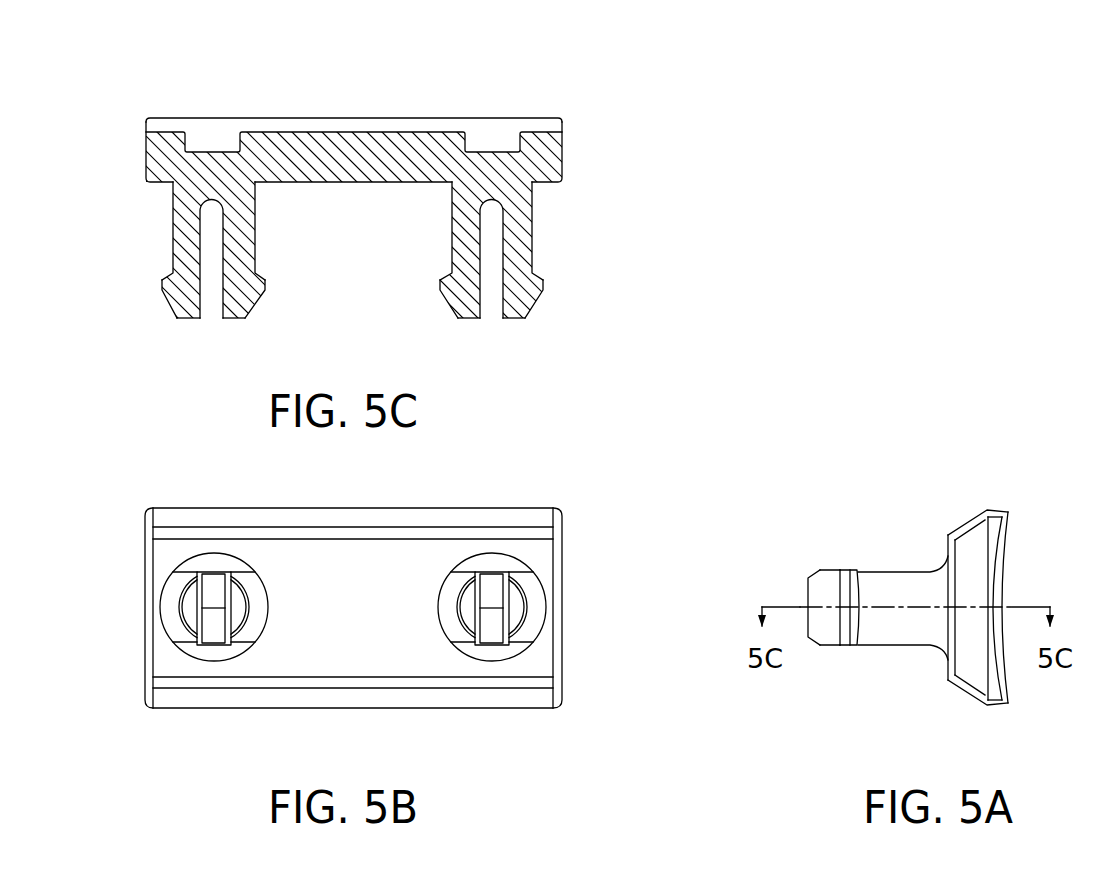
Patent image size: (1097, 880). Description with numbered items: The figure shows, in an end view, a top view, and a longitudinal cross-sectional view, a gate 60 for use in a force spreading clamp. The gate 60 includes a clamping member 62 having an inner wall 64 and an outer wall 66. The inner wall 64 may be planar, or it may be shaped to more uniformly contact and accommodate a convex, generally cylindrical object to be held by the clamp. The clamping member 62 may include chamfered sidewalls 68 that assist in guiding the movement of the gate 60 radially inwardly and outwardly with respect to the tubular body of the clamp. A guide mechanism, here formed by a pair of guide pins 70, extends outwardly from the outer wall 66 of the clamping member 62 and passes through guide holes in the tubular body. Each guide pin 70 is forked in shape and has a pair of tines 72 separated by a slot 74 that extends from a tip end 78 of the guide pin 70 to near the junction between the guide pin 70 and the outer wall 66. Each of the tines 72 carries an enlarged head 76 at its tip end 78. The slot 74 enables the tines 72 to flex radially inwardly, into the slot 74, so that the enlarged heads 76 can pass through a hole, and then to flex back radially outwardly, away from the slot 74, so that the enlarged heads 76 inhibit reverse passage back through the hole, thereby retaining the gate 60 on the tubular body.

In FIG. 5C, the gate 60 is at (569, 116).
In FIG. 5B, the gate 60 is at (540, 487).
In FIG. 5A, the gate 60 is at (992, 466).
In FIG. 5C, the clamping member 62 is at (403, 150).
In FIG. 5B, the clamping member 62 is at (353, 582).
In FIG. 5A, the clamping member 62 is at (977, 540).
In FIG. 5C, the inner wall 64 is at (343, 124).
In FIG. 5A, the inner wall 64 is at (1005, 543).
In FIG. 5C, the outer wall 66 is at (331, 183).
In FIG. 5B, the outer wall 66 is at (395, 553).
In FIG. 5A, the outer wall 66 is at (947, 552).
In FIG. 5B, the chamfered sidewalls 68 is at (345, 517).
In FIG. 5A, the chamfered sidewalls 68 is at (968, 522).
In FIG. 5C, the guide pin 70 is at (171, 229).
In FIG. 5B, the guide pin 70 is at (242, 572).
In FIG. 5A, the guide pin 70 is at (912, 647).
In FIG. 5C, the tines 72 is at (182, 250).
In FIG. 5A, the tines 72 is at (875, 633).
In FIG. 5C, the slot 74 is at (210, 309).
In FIG. 5B, the slot 74 is at (212, 638).
In FIG. 5C, the enlarged head 76 is at (175, 290).
In FIG. 5B, the enlarged head 76 is at (170, 612).
In FIG. 5A, the enlarged head 76 is at (828, 585).
In FIG. 5C, the tip end 78 is at (185, 319).
In FIG. 5A, the tip end 78 is at (808, 592).